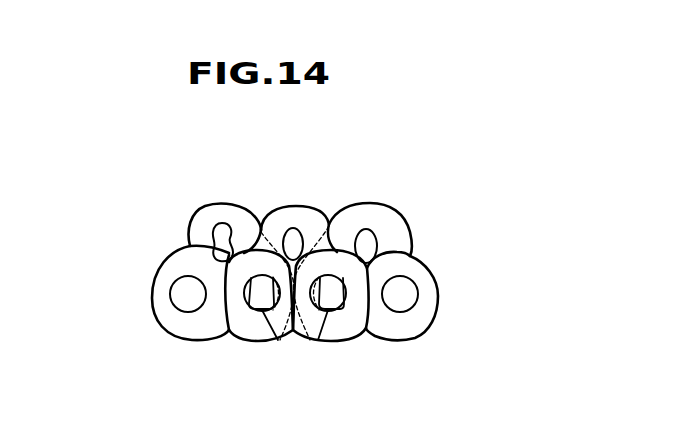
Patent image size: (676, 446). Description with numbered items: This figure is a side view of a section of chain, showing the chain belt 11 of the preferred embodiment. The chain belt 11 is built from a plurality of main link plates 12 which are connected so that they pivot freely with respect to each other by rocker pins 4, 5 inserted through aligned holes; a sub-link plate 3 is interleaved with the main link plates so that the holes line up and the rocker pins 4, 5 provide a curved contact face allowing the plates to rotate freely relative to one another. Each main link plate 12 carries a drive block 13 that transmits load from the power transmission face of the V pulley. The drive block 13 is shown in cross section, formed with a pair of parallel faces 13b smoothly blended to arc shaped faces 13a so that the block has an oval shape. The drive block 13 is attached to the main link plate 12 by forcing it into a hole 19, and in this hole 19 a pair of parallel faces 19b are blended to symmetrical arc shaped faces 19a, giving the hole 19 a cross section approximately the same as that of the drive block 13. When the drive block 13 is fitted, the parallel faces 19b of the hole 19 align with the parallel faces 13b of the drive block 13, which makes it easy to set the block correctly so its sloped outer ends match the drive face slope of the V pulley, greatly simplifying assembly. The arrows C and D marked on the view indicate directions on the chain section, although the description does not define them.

The chain belt 11 is at (419, 186).
The sub-link plate 3 is at (165, 335).
The rocker pin 4 is at (248, 314).
The rocker pin 5 is at (268, 312).
The main link plate 12 is at (302, 230).
The drive block 13 is at (286, 236).
The arc shaped face 13a is at (212, 226).
The parallel face 13b is at (246, 226).
The hole 19 is at (232, 226).
The arc shaped face 19a is at (368, 229).
The parallel face 19b is at (357, 230).
The center direction C is at (300, 345).
The outer direction D is at (152, 313).